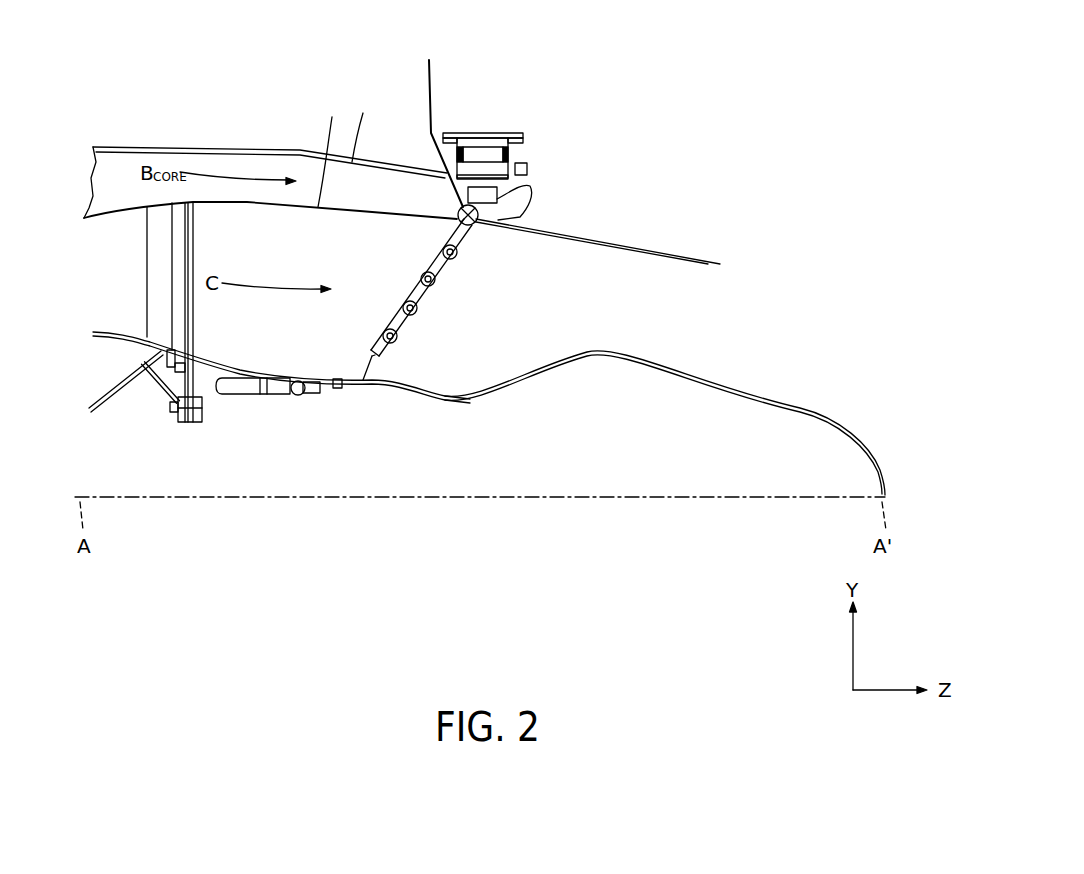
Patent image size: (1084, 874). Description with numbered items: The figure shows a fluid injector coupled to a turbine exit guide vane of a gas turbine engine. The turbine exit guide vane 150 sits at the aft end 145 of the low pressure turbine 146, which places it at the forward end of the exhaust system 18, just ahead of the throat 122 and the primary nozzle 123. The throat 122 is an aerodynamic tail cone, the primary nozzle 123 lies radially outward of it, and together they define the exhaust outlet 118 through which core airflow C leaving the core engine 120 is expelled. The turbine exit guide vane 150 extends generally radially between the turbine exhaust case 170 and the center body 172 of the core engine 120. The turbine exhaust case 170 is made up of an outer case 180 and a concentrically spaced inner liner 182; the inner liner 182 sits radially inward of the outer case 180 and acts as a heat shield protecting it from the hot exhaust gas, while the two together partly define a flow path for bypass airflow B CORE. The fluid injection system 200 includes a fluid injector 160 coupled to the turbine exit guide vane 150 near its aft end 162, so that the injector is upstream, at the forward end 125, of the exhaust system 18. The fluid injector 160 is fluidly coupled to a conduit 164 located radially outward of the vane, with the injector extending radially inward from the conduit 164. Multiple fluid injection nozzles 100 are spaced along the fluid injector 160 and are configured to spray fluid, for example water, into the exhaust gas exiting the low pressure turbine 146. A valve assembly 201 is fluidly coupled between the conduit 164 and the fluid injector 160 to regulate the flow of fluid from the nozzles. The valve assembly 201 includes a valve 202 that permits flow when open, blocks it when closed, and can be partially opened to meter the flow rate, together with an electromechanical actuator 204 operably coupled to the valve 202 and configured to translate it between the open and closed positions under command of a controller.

The exhaust system 18 is at (897, 72).
The fluid injection nozzles 100 is at (444, 251).
The exhaust outlet 118 is at (702, 298).
The core engine 120 is at (135, 90).
The throat 122 is at (768, 427).
The primary nozzle 123 is at (704, 258).
The forward end 125 is at (363, 384).
The aft end 145 is at (332, 386).
The low pressure turbine 146 is at (57, 304).
The turbine exit guide vane 150 is at (299, 340).
The fluid injector 160 is at (416, 299).
The aft end 162 is at (397, 351).
The conduit 164 is at (432, 94).
The turbine exhaust case 170 is at (390, 93).
The center body 172 is at (289, 480).
The outer case 180 is at (366, 127).
The inner liner 182 is at (331, 150).
The fluid injection system 200 is at (484, 44).
The valve assembly 201 is at (551, 196).
The valve 202 is at (577, 172).
The electromechanical actuator 204 is at (497, 195).